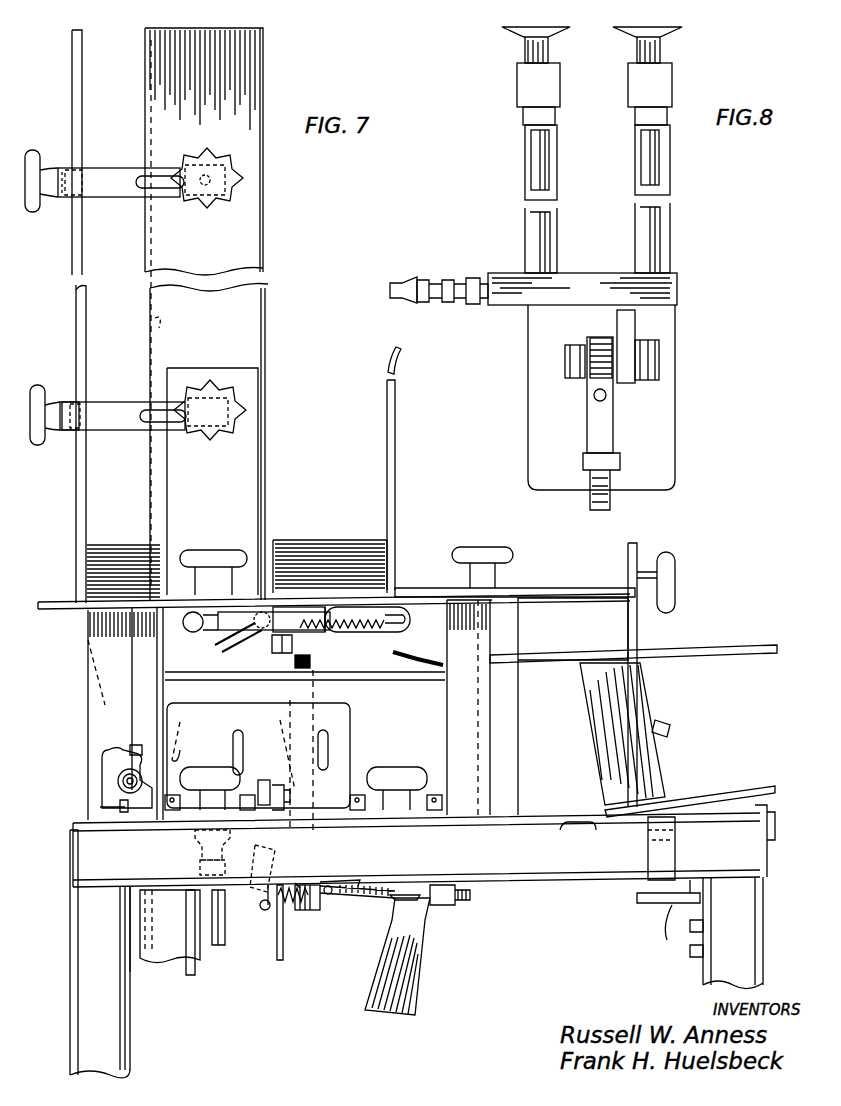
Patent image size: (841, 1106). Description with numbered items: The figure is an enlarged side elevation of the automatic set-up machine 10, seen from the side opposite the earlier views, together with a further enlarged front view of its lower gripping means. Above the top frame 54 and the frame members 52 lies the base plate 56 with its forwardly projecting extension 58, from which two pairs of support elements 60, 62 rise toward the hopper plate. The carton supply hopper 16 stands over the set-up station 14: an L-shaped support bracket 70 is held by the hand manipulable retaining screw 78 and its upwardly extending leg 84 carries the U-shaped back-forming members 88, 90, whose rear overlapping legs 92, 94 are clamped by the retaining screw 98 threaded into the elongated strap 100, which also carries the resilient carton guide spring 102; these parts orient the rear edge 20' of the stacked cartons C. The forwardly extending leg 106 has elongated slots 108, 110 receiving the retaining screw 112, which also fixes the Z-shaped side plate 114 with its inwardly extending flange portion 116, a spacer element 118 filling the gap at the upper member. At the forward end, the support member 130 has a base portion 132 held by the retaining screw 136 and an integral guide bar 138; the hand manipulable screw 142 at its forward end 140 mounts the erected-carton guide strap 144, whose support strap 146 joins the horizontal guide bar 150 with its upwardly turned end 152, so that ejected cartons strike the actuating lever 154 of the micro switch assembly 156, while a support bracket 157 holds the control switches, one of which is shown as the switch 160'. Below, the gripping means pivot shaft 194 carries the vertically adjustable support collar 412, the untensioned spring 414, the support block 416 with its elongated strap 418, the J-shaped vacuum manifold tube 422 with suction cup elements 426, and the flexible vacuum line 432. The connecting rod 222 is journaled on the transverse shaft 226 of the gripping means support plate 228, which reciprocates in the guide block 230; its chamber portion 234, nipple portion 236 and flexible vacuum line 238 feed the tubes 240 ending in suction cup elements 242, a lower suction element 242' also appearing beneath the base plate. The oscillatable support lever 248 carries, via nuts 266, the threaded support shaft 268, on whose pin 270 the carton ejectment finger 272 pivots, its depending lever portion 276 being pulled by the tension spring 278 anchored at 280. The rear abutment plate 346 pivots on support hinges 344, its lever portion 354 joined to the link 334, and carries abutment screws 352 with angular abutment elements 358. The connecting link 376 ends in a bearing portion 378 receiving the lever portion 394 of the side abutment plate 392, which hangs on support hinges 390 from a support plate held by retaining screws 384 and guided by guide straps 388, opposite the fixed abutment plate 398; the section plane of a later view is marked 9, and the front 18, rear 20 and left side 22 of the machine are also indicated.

In FIG. 7, the automatic set-up machine 10 is at (310, 272).
In FIG. 7, the set-up station 14 is at (420, 610).
In FIG. 7, the carton supply hopper 16 is at (270, 180).
In FIG. 7, the front of the machine 18 is at (765, 900).
In FIG. 7, the rear of the machine 20 is at (81, 954).
In FIG. 7, the rear edge of the stacked cartons 20' is at (95, 550).
In FIG. 7, the left side of the machine 22 is at (538, 870).
In FIG. 7, the leg 52 is at (120, 1030).
In FIG. 7, the top frame 54 is at (598, 864).
In FIG. 7, the base plate 56 is at (520, 820).
In FIG. 7, the forwardly projecting extension 58 is at (780, 810).
In FIG. 7, the support elements 60 is at (122, 653).
In FIG. 7, the support elements 62 is at (177, 653).
In FIG. 7, the L-shaped support bracket 70 is at (255, 598).
In FIG. 7, the hand manipulable retaining screw 78 is at (206, 548).
In FIG. 7, the upwardly extending leg 84 is at (246, 463).
In FIG. 7, the lower back-forming member 88 is at (74, 430).
In FIG. 7, the upper back-forming member 90 is at (70, 198).
In FIG. 7, the rear overlapping leg 92 is at (70, 166).
In FIG. 7, the rear overlapping leg 94 is at (66, 170).
In FIG. 7, the hand manipulable retaining screw 98 is at (33, 213).
In FIG. 7, the elongated strap 100 is at (72, 67).
In FIG. 7, the resilient carton guide spring 102 is at (88, 689).
In FIG. 7, the forwardly extending leg 106 is at (124, 196).
In FIG. 7, the elongated slot 108 is at (147, 412).
In FIG. 7, the elongated slot 110 is at (140, 176).
In FIG. 7, the hand manipulable retaining screw 112 is at (199, 204).
In FIG. 7, the Z-shaped side plate 114 is at (150, 66).
In FIG. 7, the inwardly extending flange portion 116 is at (150, 335).
In FIG. 7, the spacer element 118 is at (221, 204).
In FIG. 7, the support member 130 is at (400, 590).
In FIG. 7, the base portion 132 is at (405, 595).
In FIG. 7, the hand manipulable retaining screw 136 is at (490, 553).
In FIG. 7, the guide strap or bar 138 is at (395, 460).
In FIG. 7, the forward end of the base 140 is at (635, 560).
In FIG. 7, the hand manipulable screw 142 is at (672, 555).
In FIG. 7, the erected-carton guide strap 144 is at (540, 655).
In FIG. 7, the support strap 146 is at (628, 635).
In FIG. 7, the guide bar 150 is at (739, 645).
In FIG. 7, the upwardly turned rearwardly extending end 152 is at (405, 655).
In FIG. 7, the actuating lever 154 is at (715, 795).
In FIG. 7, the micro switch assembly 156 is at (650, 890).
In FIG. 7, the support bracket 157 is at (560, 815).
In FIG. 7, the panel 160' is at (646, 734).
In FIG. 7, the gripping means pivot shaft 194 is at (310, 659).
In FIG. 8, the connecting rod 222 is at (608, 498).
In FIG. 8, the transverse shaft 226 is at (565, 365).
In FIG. 7, the gripping means support plate 228 is at (217, 934).
In FIG. 8, the gripping means support plate 228 is at (629, 397).
In FIG. 7, the guide block 230 is at (178, 938).
In FIG. 8, the chamber portion 234 is at (586, 288).
In FIG. 8, the nipple portion 236 is at (474, 265).
In FIG. 8, the flexible vacuum line 238 is at (406, 265).
In FIG. 7, the tubes 240 is at (224, 933).
In FIG. 8, the tubes 240 is at (535, 229).
In FIG. 8, the suction cup elements 242 is at (592, 45).
In FIG. 7, the screw 242' is at (197, 852).
In FIG. 7, the oscillatable support lever 248 is at (420, 1008).
In FIG. 7, the nuts 266 is at (395, 905).
In FIG. 7, the threaded support shaft 268 is at (348, 893).
In FIG. 7, the pin 270 is at (263, 892).
In FIG. 7, the carton ejectment finger 272 is at (282, 758).
In FIG. 7, the depending lever portion 276 is at (270, 907).
In FIG. 7, the tension spring 278 is at (295, 900).
In FIG. 7, the anchor 280 is at (335, 885).
In FIG. 7, the link 334 is at (135, 972).
In FIG. 7, the support hinges 344 is at (105, 804).
In FIG. 7, the rear abutment plate 346 is at (140, 757).
In FIG. 7, the abutment screws 352 is at (130, 753).
In FIG. 7, the rearwardly extending lever portion 354 is at (118, 780).
In FIG. 7, the angular abutment element 358 is at (180, 731).
In FIG. 7, the connecting link 376 is at (283, 948).
In FIG. 7, the bearing portion 378 is at (286, 788).
In FIG. 7, the hand manipulable retaining screws 384 is at (205, 770).
In FIG. 7, the guide straps 388 is at (170, 810).
In FIG. 7, the support hinges 390 is at (190, 810).
In FIG. 7, the side abutment plate 392 is at (340, 715).
In FIG. 7, the lever portion 394 is at (262, 780).
In FIG. 7, the fixed abutment plate 398 is at (400, 689).
In FIG. 7, the support collar 412 is at (285, 653).
In FIG. 7, the untensioned spring 414 is at (378, 632).
In FIG. 7, the support block 416 is at (305, 620).
In FIG. 7, the elongated strap 418 is at (335, 625).
In FIG. 7, the vacuum manifold tube 422 is at (234, 640).
In FIG. 7, the suction cup elements 426 is at (195, 638).
In FIG. 7, the flexible vacuum line 432 is at (247, 642).
In FIG. 7, the section line 9 is at (31, 608).
In FIG. 7, the cartons C is at (300, 545).